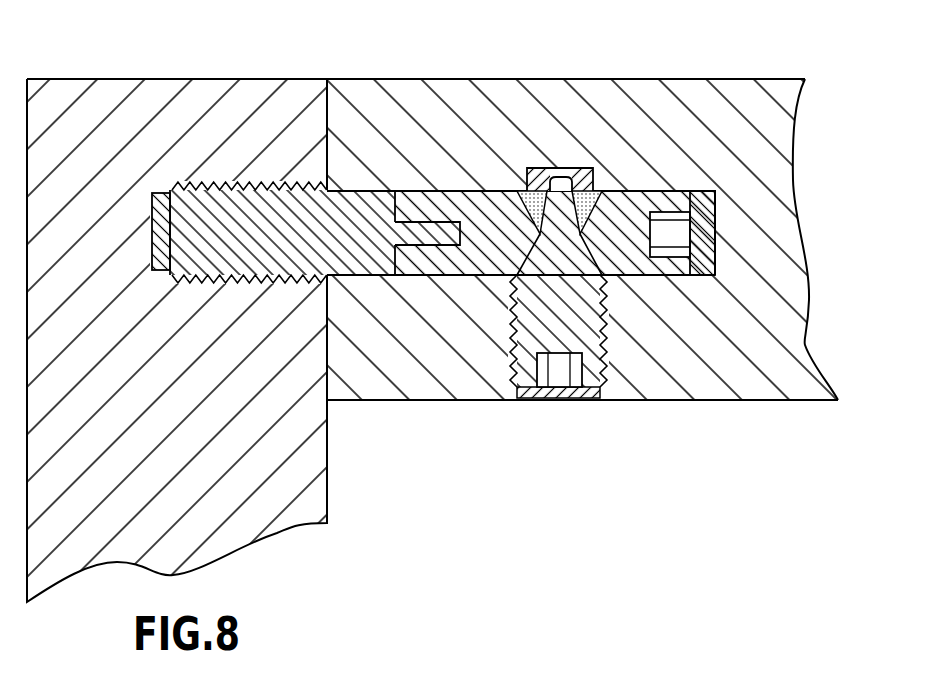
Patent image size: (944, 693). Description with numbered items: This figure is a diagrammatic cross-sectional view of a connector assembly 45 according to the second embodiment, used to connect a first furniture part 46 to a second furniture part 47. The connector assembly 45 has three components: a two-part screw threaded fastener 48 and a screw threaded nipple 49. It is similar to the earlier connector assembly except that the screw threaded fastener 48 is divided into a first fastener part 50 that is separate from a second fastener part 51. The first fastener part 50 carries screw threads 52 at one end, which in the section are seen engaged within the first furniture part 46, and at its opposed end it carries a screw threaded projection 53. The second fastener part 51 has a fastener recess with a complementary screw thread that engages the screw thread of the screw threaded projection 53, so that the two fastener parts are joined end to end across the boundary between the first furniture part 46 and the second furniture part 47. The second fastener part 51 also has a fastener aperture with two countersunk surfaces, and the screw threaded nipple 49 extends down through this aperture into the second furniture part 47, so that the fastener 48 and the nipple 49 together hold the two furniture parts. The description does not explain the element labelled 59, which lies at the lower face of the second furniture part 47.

The connector assembly 45 is at (488, 160).
The first furniture part 46 is at (75, 558).
The second furniture part 47 is at (790, 378).
The screw threaded fastener 48 is at (395, 285).
The screw threaded nipple 49 is at (590, 330).
The first fastener part 50 is at (195, 204).
The second fastener part 51 is at (445, 260).
The screw threads 52 is at (255, 188).
The screw threaded projection 53 is at (430, 232).
The bottom surface 59 is at (708, 402).